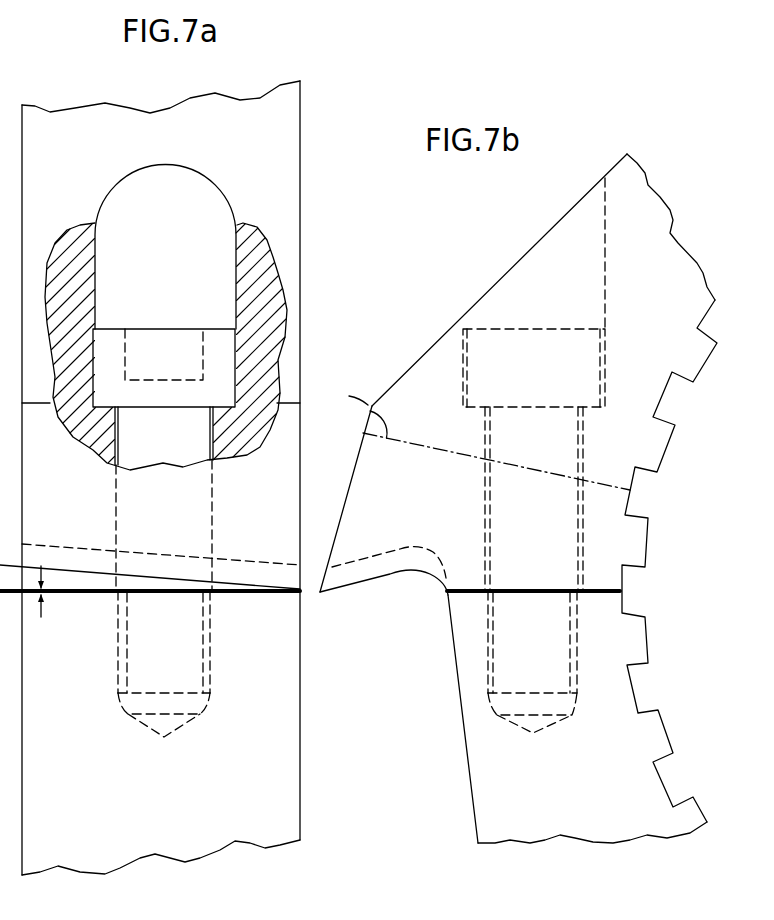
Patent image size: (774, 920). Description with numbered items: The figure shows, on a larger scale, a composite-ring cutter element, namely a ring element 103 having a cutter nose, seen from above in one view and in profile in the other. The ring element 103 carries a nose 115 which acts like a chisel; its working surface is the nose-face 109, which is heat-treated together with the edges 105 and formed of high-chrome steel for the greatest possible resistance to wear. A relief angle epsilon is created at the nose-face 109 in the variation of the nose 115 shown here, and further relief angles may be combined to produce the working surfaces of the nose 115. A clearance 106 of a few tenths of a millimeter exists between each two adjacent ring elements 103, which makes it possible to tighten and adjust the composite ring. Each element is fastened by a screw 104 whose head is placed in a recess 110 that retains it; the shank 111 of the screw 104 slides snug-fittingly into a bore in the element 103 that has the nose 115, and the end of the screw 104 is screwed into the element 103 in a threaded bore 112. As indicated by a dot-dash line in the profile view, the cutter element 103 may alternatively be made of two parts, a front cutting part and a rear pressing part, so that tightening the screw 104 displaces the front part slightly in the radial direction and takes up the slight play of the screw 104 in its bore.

In FIG. 7A, the ring element 103 is at (85, 504).
In FIG. 7B, the ring element 103 is at (657, 232).
In FIG. 7A, the screw 104 is at (140, 340).
In FIG. 7B, the screw 104 is at (555, 340).
In FIG. 7A, the edge 105 is at (305, 230).
In FIG. 7B, the edge 105 is at (392, 383).
In FIG. 7A, the clearance 106 is at (47, 594).
In FIG. 7A, the nose-face 109 is at (82, 573).
In FIG. 7B, the nose-face 109 is at (388, 562).
In FIG. 7A, the recess 110 is at (235, 270).
In FIG. 7B, the recess 110 is at (605, 225).
In FIG. 7A, the shank 111 is at (190, 447).
In FIG. 7B, the shank 111 is at (508, 496).
In FIG. 7A, the threaded bore 112 is at (203, 647).
In FIG. 7B, the threaded bore 112 is at (494, 660).
In FIG. 7A, the nose 115 is at (286, 575).
In FIG. 7B, the nose 115 is at (358, 497).